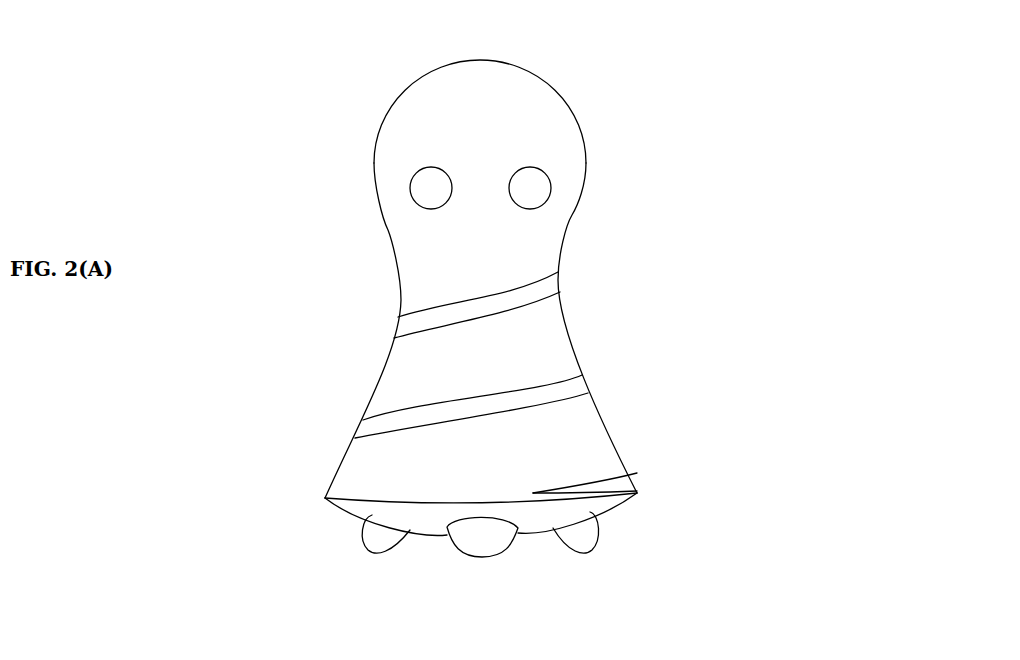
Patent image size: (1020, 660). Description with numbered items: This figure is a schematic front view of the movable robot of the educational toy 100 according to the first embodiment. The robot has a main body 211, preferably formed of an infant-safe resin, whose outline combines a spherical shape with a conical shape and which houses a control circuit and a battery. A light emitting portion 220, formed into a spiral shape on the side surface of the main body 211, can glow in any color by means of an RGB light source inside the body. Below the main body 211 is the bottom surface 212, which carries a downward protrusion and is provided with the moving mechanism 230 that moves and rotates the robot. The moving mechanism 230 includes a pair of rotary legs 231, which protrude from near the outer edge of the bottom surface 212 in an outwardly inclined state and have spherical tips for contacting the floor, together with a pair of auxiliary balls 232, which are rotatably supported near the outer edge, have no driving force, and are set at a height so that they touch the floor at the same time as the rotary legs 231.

The educational toy 100 is at (708, 42).
The main body 211 is at (397, 98).
The bottom surface 212 is at (362, 508).
The light emitting portion 220 is at (560, 280).
The moving mechanism 230 is at (524, 573).
The rotary legs 231 is at (377, 540).
The auxiliary balls 232 is at (487, 547).